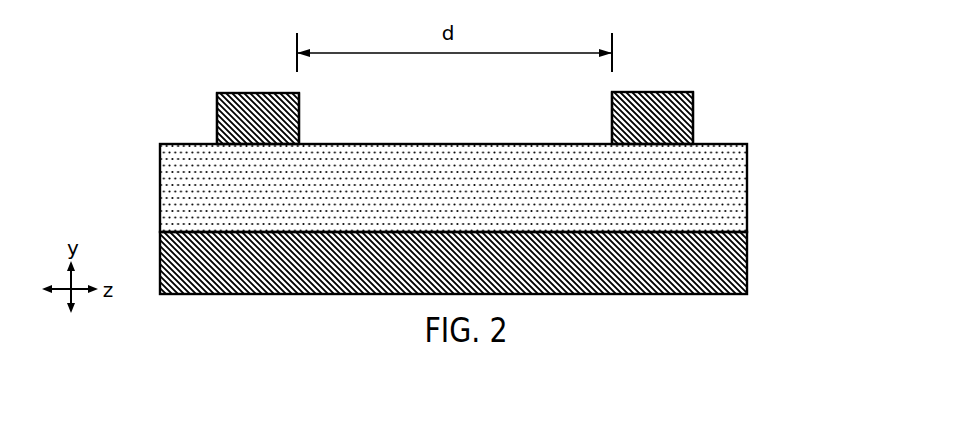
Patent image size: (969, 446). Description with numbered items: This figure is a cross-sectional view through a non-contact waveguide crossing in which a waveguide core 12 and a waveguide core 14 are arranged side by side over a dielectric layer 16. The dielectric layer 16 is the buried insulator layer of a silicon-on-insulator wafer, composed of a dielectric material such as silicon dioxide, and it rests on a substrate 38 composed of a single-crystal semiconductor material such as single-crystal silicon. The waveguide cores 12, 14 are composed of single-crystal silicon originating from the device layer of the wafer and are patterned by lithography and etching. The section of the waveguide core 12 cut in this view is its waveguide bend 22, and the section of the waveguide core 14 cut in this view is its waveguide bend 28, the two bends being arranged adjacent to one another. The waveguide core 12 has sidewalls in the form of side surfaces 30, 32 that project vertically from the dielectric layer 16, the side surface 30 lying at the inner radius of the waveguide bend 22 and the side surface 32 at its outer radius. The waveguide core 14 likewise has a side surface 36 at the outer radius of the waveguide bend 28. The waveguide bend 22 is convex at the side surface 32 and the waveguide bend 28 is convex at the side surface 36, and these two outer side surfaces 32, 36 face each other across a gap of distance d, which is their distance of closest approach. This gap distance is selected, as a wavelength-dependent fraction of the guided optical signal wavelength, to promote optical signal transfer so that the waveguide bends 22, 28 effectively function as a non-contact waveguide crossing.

The waveguide core 12 is at (193, 54).
The waveguide core 14 is at (711, 63).
The dielectric layer 16 is at (725, 202).
The waveguide bend 22 is at (242, 107).
The waveguide bend 28 is at (665, 107).
The side surface 30 is at (217, 133).
The side surface 32 is at (299, 112).
The side surface 36 is at (612, 118).
The substrate 38 is at (727, 260).